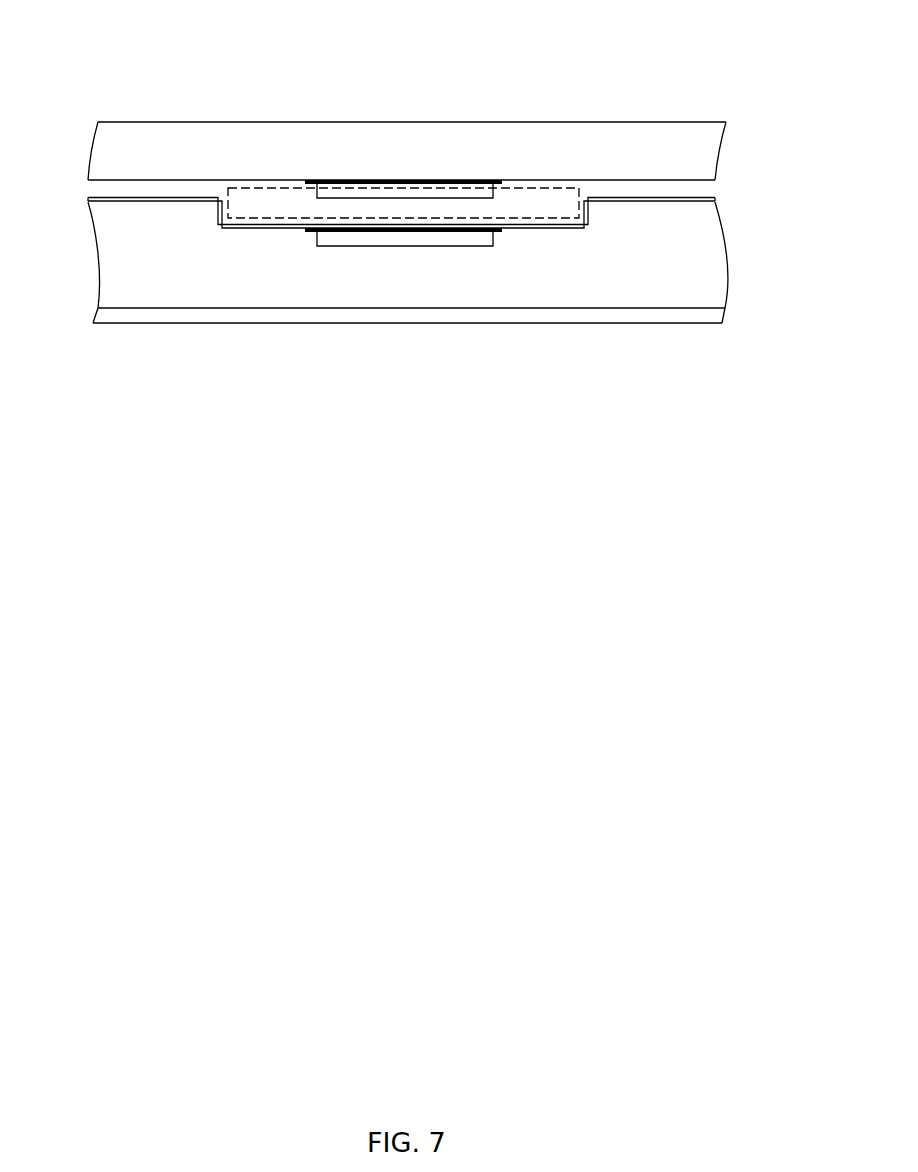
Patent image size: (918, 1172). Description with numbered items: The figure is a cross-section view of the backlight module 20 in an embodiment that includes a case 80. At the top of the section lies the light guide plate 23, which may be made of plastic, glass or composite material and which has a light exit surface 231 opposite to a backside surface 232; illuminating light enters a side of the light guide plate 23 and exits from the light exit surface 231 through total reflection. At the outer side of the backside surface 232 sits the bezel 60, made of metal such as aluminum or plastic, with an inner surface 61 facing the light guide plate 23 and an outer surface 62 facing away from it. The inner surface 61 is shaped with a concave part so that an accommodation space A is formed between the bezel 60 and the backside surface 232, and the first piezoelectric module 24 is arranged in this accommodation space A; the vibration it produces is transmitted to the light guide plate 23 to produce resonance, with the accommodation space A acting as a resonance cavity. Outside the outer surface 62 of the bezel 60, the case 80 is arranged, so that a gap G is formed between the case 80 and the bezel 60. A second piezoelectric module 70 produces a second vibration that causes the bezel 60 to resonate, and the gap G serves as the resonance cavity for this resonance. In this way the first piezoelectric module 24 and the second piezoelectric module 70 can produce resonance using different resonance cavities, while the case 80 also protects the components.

The backlight module 20 is at (57, 49).
The light guide plate 23 is at (673, 163).
The light exit surface 231 is at (620, 120).
The backside surface 232 is at (632, 182).
The first piezoelectric module 24 is at (462, 193).
The accommodation space A is at (547, 195).
The bezel 60 is at (117, 203).
The inner surface 61 is at (692, 198).
The outer surface 62 is at (678, 202).
The second piezoelectric module 70 is at (347, 237).
The case 80 is at (497, 315).
The gap G is at (420, 277).